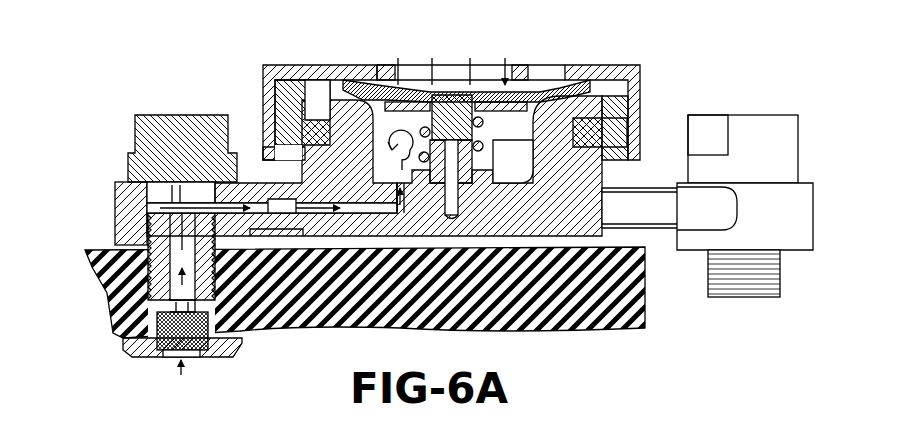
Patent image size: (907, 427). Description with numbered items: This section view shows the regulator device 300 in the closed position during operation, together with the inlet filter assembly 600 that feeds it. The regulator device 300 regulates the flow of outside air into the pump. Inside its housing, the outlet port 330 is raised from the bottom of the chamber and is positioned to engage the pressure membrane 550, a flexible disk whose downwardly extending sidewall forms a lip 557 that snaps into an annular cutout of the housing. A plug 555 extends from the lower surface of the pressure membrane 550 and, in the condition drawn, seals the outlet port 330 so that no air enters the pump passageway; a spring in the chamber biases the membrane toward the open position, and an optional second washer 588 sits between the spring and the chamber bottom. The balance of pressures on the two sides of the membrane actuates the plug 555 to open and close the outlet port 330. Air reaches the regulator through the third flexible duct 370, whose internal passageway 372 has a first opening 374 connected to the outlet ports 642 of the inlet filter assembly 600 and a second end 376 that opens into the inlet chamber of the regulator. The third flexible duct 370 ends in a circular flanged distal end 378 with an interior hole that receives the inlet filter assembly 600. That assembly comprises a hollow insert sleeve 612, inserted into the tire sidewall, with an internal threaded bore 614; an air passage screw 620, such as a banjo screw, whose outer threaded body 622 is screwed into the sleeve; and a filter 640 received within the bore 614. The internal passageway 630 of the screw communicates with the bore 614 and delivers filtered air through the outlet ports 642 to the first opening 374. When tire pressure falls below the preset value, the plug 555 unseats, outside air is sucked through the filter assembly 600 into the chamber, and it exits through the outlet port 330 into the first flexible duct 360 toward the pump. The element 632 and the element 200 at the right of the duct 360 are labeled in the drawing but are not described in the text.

The fitting assembly 200 is at (825, 125).
The regulator device 300 is at (545, 57).
The outlet port 330 is at (450, 185).
The first flexible duct 360 is at (645, 208).
The third flexible duct 370 is at (282, 225).
The internal passageway 372 is at (265, 205).
The first opening 374 is at (235, 200).
The second end 376 is at (400, 190).
The circular flanged distal end 378 is at (125, 212).
The pressure membrane 550 is at (362, 85).
The plug 555 is at (445, 130).
The lip 557 is at (595, 130).
The second washer 588 is at (498, 185).
The inlet filter assembly 600 is at (130, 225).
The insert sleeve 612 is at (215, 338).
The internal threaded bore 614 is at (190, 345).
The air passage screw 620 is at (158, 140).
The outer threaded body 622 is at (140, 245).
The internal passageway 630 is at (176, 258).
The bore seat 632 is at (176, 295).
The filter 640 is at (170, 340).
The outlet ports 642 is at (208, 205).